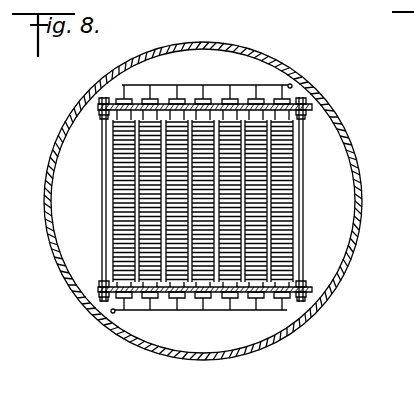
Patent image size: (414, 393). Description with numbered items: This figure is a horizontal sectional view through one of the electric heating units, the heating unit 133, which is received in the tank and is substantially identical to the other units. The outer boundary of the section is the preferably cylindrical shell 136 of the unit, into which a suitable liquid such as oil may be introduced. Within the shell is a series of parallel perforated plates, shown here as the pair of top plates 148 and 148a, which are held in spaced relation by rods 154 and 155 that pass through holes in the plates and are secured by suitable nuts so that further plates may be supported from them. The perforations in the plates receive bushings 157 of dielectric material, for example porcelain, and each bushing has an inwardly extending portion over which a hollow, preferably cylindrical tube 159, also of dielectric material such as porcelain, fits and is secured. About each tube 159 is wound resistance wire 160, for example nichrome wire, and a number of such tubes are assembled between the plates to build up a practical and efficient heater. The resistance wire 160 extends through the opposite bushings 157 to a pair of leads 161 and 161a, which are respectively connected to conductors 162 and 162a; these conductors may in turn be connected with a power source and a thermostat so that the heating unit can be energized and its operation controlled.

The heating unit 133 is at (257, 49).
The cylindrical shell 136 is at (54, 245).
The top plate 148 is at (220, 300).
The top plate 148a is at (160, 104).
The rod 154 is at (302, 215).
The rod 155 is at (105, 188).
The bushing 157 is at (246, 104).
The hollow tube 159 is at (152, 257).
The resistance wire 160 is at (120, 206).
The lead 161 is at (167, 312).
The lead 161a is at (193, 86).
The conductor 162 is at (112, 313).
The conductor 162a is at (291, 85).